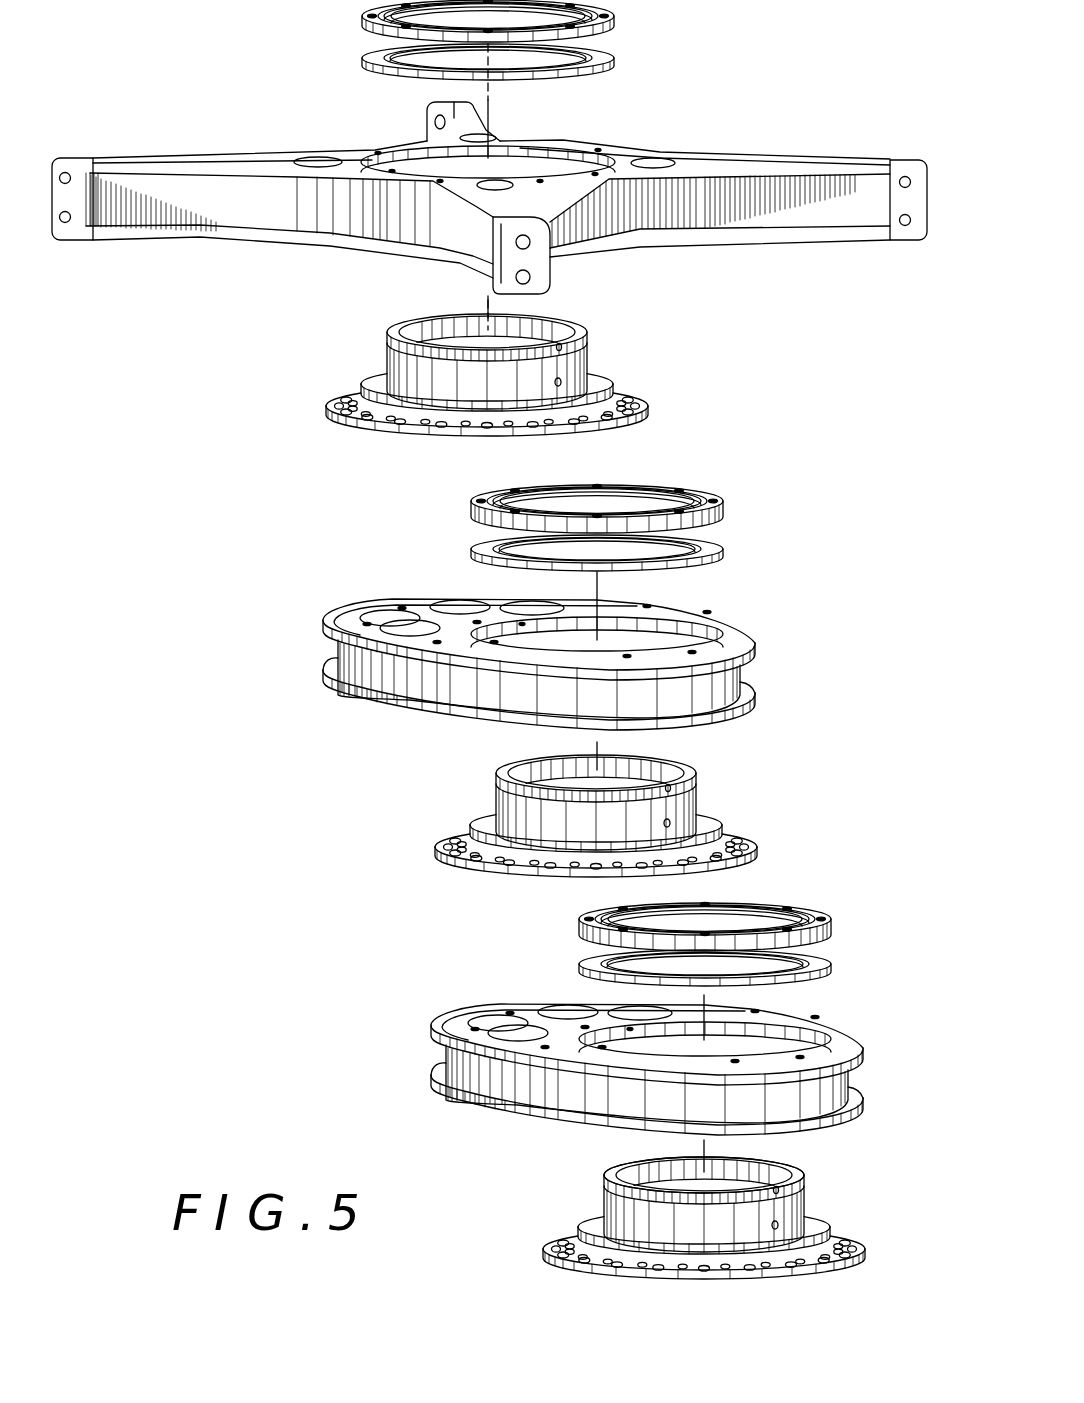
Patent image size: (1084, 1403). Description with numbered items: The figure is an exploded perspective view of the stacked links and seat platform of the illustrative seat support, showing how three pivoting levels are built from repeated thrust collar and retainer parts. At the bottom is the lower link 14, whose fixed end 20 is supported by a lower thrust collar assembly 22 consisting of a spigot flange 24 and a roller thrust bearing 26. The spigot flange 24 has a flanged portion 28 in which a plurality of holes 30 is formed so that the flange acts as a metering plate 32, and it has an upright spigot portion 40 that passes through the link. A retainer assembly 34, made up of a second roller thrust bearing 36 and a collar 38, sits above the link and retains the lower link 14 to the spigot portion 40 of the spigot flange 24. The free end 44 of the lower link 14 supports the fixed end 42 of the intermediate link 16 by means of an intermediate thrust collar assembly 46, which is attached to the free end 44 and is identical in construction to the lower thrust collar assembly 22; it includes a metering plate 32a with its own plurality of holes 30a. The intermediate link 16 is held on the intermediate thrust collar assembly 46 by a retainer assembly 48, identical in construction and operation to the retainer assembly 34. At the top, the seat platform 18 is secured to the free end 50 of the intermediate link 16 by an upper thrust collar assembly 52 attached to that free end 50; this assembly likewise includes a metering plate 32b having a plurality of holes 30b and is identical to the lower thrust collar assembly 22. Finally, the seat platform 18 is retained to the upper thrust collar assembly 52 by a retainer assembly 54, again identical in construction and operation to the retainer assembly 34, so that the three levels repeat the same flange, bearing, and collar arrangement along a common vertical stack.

The lower link 14 is at (646, 1069).
The intermediate link 16 is at (542, 664).
The seat platform 18 is at (779, 164).
The fixed end 20 is at (672, 1044).
The lower thrust collar assembly 22 is at (713, 1229).
The spigot flange 24 is at (676, 1204).
The roller thrust bearing 26 is at (725, 1214).
The flanged portion 28 is at (676, 1237).
The holes 30 is at (721, 1235).
The metering plate 32 is at (704, 1281).
The retainer assembly 34 is at (739, 948).
The second roller thrust bearing 36 is at (800, 975).
The collar 38 is at (805, 915).
The spigot portion 40 is at (728, 1169).
The fixed end 42 is at (562, 639).
The free end 44 is at (613, 1080).
The intermediate thrust collar assembly 46 is at (594, 827).
The retainer assembly 48 is at (746, 500).
The free end 50 is at (509, 679).
The upper thrust collar assembly 52 is at (486, 382).
The retainer assembly 54 is at (636, 13).
The holes 30a is at (560, 835).
The holes 30b is at (459, 395).
The metering plate 32a is at (567, 873).
The metering plate 32b is at (465, 428).